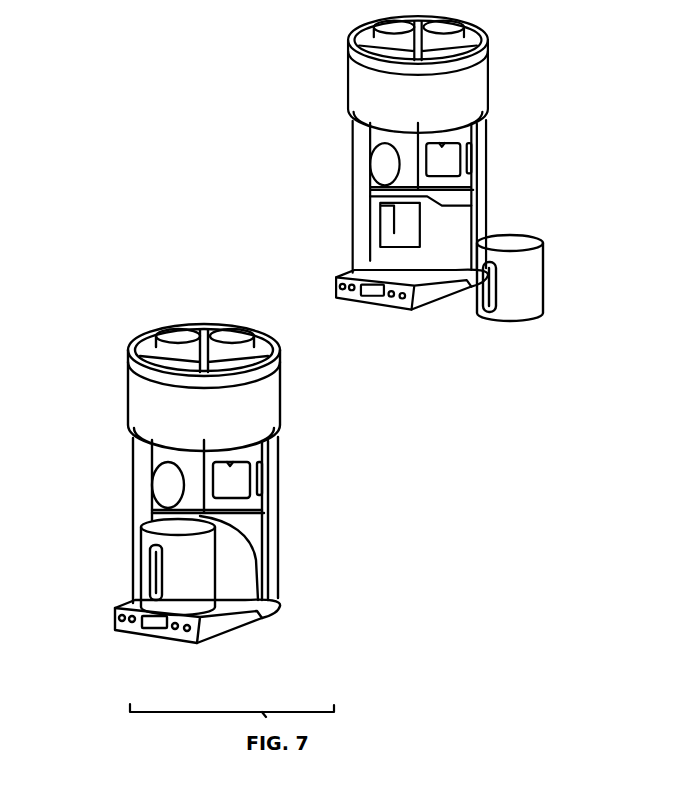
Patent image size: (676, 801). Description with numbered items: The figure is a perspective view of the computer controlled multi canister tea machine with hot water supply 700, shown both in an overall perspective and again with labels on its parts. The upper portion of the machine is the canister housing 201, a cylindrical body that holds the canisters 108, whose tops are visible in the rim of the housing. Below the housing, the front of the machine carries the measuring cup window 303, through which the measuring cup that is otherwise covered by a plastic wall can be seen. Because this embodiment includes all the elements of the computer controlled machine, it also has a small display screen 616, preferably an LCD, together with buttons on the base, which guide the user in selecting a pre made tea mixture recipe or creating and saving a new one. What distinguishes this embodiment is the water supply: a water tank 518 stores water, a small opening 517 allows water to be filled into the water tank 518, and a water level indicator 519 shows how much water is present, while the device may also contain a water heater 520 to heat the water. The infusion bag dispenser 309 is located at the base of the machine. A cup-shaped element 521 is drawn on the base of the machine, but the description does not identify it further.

The computer controlled tea machine with water supply 700 is at (136, 264).
The canisters 108 is at (283, 338).
The canister housing 201 is at (263, 419).
The water heater 520 is at (272, 437).
The water level indicator 519 is at (278, 452).
The small opening 517 is at (233, 482).
The water tank 518 is at (237, 501).
The measuring cup window 303 is at (163, 486).
The cup 521 is at (140, 587).
The infusion bag dispenser 309 is at (276, 603).
The display screen 616 is at (156, 628).